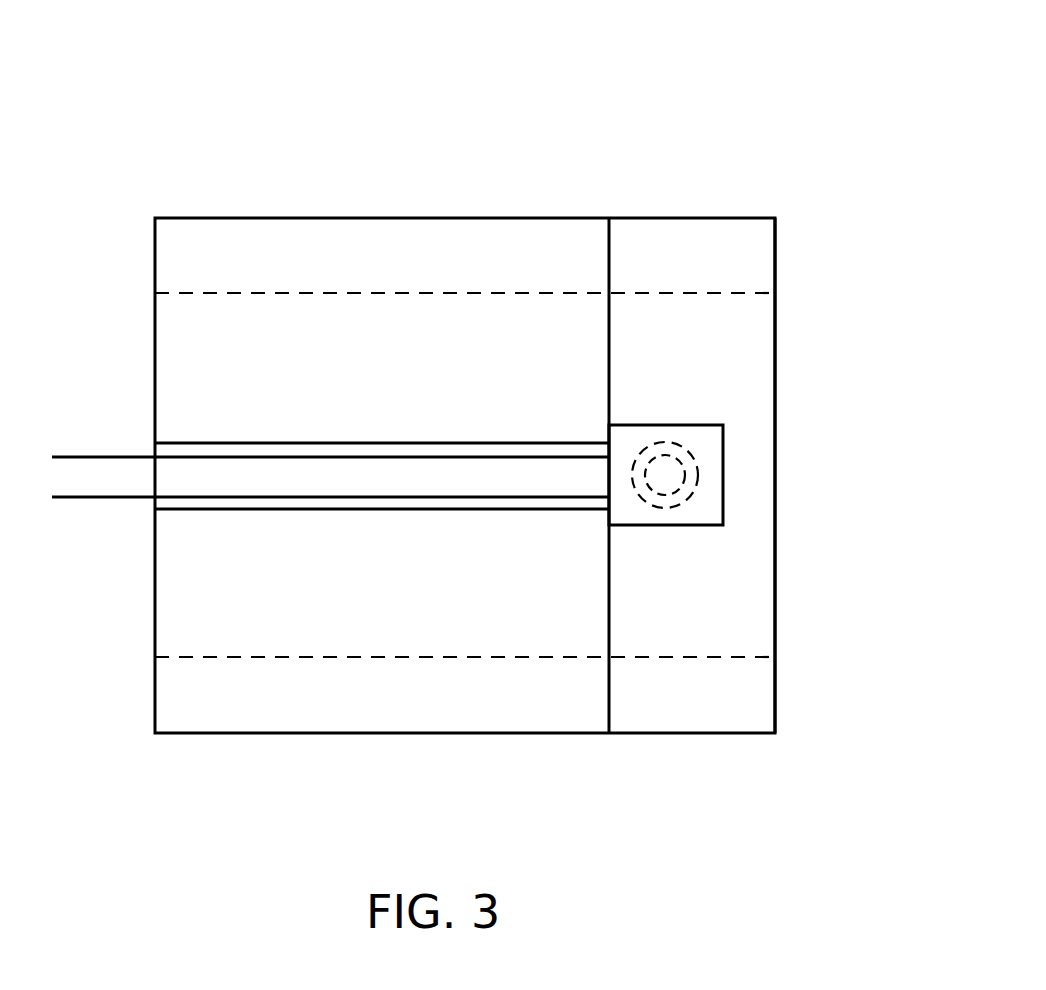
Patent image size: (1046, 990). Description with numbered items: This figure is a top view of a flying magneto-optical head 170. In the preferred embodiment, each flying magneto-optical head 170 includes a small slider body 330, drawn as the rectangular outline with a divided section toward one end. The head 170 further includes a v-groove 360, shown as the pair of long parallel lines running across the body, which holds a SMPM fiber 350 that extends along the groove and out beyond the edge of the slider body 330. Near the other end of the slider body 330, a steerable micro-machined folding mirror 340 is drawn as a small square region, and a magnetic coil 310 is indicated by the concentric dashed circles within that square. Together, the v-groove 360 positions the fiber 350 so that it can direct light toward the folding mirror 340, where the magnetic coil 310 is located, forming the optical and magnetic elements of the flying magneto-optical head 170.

The flying magneto-optical head 170 is at (635, 44).
The magnetic coil 310 is at (697, 445).
The slider body 330 is at (775, 475).
The steerable micro-machined folding mirror 340 is at (708, 511).
The SMPM fiber 350 is at (293, 497).
The v-groove 360 is at (307, 443).